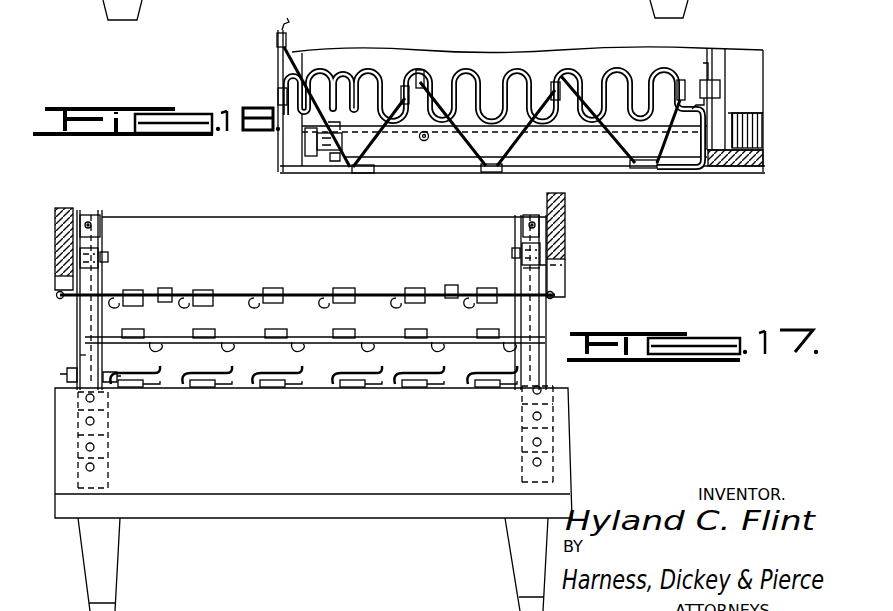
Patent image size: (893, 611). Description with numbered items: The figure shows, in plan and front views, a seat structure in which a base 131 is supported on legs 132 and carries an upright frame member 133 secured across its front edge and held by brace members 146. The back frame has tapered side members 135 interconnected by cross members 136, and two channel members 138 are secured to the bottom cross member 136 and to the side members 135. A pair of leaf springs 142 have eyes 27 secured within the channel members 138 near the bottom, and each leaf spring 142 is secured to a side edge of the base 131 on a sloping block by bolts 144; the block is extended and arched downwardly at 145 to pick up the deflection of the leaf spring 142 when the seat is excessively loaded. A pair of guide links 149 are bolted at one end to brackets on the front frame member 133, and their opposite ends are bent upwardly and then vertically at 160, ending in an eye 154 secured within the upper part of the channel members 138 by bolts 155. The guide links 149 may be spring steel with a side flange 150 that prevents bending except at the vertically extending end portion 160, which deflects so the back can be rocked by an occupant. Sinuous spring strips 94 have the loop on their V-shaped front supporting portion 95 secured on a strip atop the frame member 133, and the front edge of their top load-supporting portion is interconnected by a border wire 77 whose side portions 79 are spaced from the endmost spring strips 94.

In FIG. 17, the eyes 27 is at (107, 415).
In FIG. 16, the border wire 77 is at (278, 55).
In FIG. 17, the border wire 77 is at (314, 290).
In FIG. 16, the side portions 79 is at (684, 167).
In FIG. 17, the side portions 79 is at (232, 293).
In FIG. 16, the sinuous spring strips 94 is at (560, 76).
In FIG. 17, the sinuous spring strips 94 is at (323, 300).
In FIG. 17, the V-shaped front supporting portion 95 is at (293, 349).
In FIG. 16, the base 131 is at (496, 51).
In FIG. 17, the base 131 is at (380, 508).
In FIG. 17, the legs 132 is at (105, 568).
In FIG. 16, the upright frame member 133 is at (296, 153).
In FIG. 17, the upright frame member 133 is at (358, 449).
In FIG. 17, the tapered side members 135 is at (45, 205).
In FIG. 17, the cross members 136 is at (355, 260).
In FIG. 16, the channel members 138 is at (765, 113).
In FIG. 17, the channel members 138 is at (106, 256).
In FIG. 17, the leaf springs 142 is at (107, 433).
In FIG. 16, the bolts 144 is at (427, 145).
In FIG. 17, the bolts 144 is at (110, 450).
In FIG. 16, the downwardly arched portion 145 is at (622, 124).
In FIG. 16, the brace members 146 is at (333, 174).
In FIG. 16, the guide links 149 is at (597, 142).
In FIG. 17, the guide links 149 is at (540, 317).
In FIG. 16, the side flange 150 is at (557, 134).
In FIG. 17, the side flange 150 is at (80, 357).
In FIG. 17, the eye 154 is at (563, 244).
In FIG. 17, the bolts 155 is at (570, 262).
In FIG. 17, the vertically extending end portion 160 is at (528, 270).